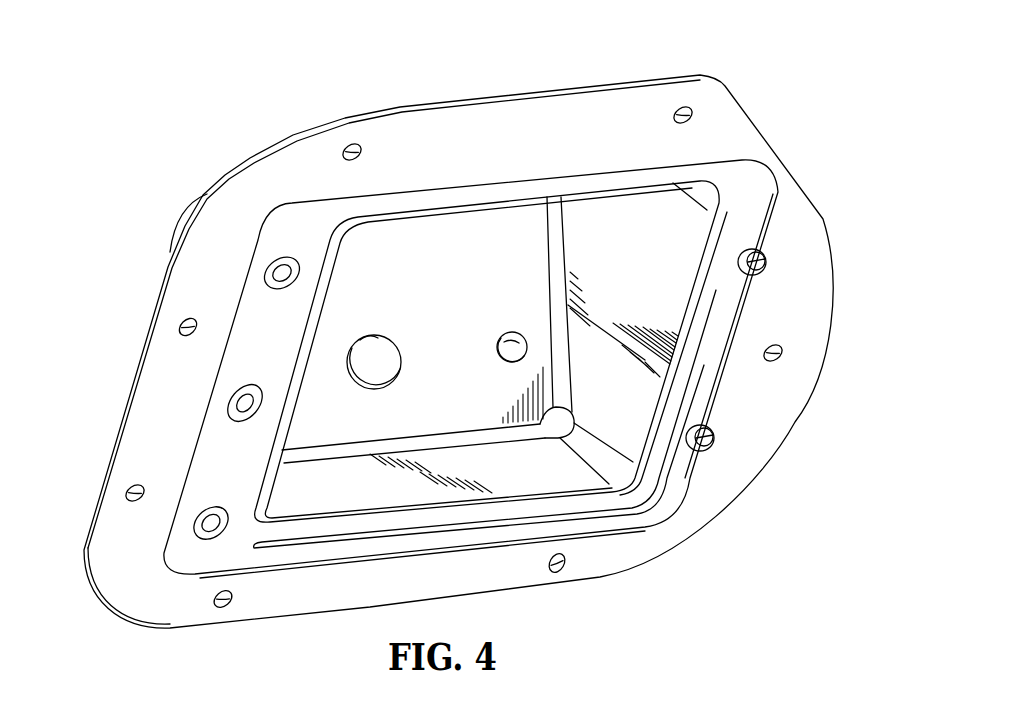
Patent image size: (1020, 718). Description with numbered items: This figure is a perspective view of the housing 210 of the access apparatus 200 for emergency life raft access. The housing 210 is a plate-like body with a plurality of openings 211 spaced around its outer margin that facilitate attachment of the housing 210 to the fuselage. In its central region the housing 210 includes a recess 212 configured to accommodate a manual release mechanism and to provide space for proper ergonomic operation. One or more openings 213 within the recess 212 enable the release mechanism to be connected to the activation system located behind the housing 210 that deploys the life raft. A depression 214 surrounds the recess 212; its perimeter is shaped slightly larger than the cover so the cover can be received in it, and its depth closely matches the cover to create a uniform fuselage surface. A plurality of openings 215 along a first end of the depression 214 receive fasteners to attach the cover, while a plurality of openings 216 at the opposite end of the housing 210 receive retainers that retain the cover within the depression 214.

The access apparatus 200 is at (178, 89).
The housing 210 is at (524, 92).
The openings 211 is at (352, 144).
The recess 212 is at (464, 254).
The openings 213 is at (377, 337).
The depression 214 is at (623, 172).
The openings 215 is at (274, 258).
The openings 216 is at (771, 268).